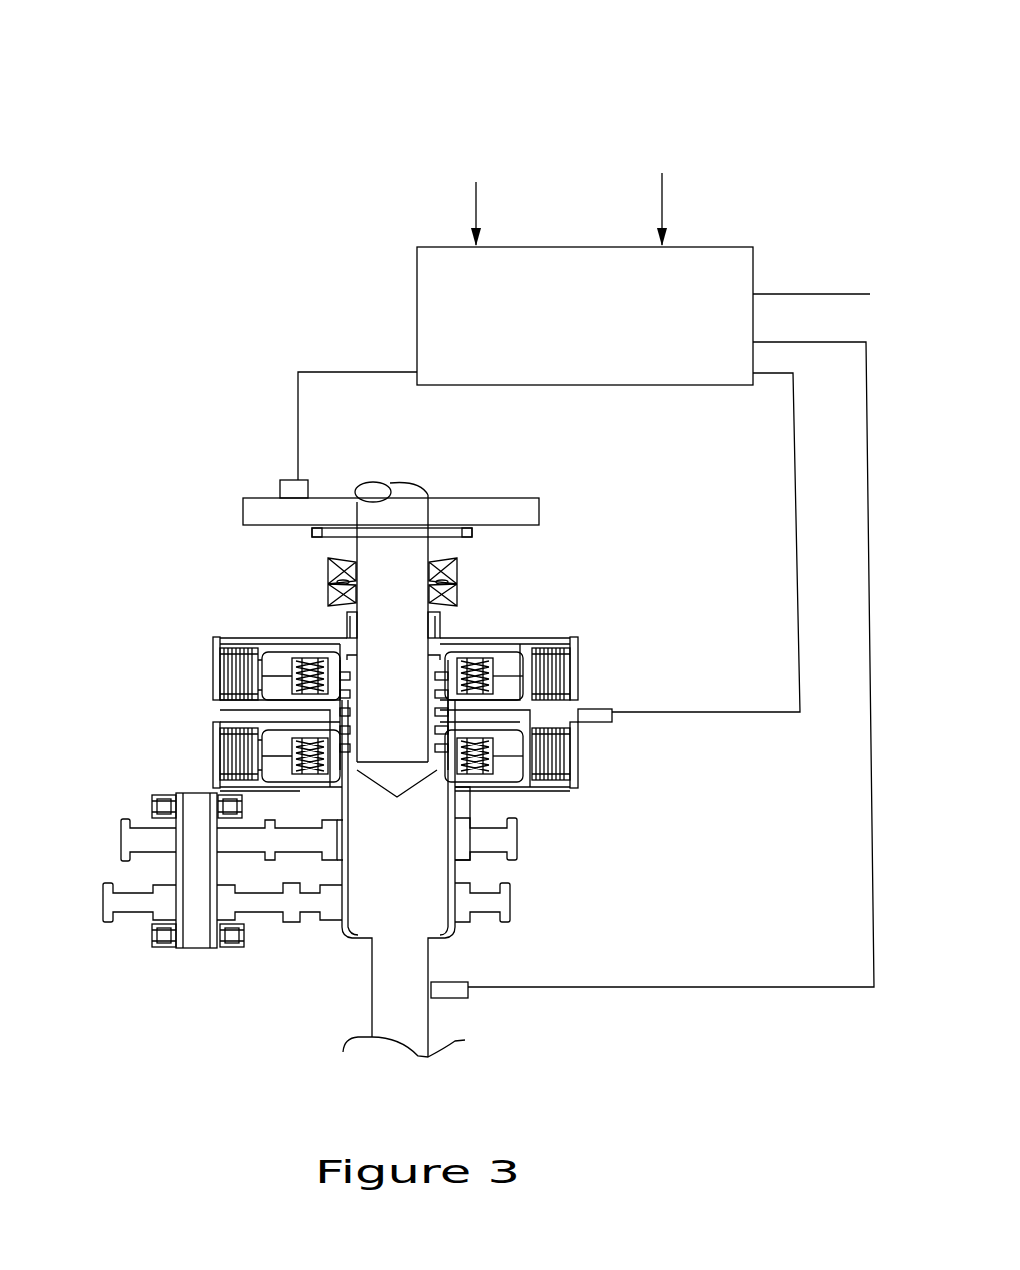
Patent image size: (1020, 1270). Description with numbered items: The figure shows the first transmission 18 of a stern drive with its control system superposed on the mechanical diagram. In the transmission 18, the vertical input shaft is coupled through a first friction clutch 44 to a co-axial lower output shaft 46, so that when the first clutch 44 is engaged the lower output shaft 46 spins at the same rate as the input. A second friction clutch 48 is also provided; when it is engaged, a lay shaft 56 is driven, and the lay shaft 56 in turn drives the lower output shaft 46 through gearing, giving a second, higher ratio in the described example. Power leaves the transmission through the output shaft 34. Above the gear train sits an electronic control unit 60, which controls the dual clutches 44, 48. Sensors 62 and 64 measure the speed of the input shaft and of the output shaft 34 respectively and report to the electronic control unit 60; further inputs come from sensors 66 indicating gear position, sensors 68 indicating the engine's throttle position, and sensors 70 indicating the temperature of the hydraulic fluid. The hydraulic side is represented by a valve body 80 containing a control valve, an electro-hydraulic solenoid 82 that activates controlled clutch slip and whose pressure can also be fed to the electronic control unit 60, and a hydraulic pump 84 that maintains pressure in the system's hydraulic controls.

The first transmission 18 is at (550, 138).
The output shaft of the transmission 34 is at (390, 1026).
The first friction clutch 44 is at (240, 683).
The lower output shaft 46 is at (370, 985).
The second friction clutch 48 is at (240, 760).
The lay shaft 56 is at (175, 870).
The electronic control unit 60 is at (717, 268).
The input shaft speed sensor 62 is at (615, 724).
The output shaft speed sensor 64 is at (473, 1000).
The gear position sensors 66 is at (476, 182).
The throttle position sensors 68 is at (662, 173).
The hydraulic fluid temperature sensors 70 is at (838, 295).
The valve body 80 is at (241, 512).
The electro-hydraulic solenoid 82 is at (291, 478).
The hydraulic pump 84 is at (313, 539).